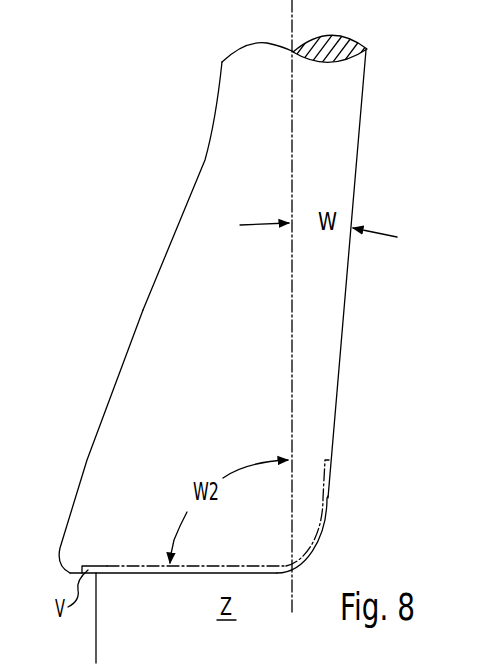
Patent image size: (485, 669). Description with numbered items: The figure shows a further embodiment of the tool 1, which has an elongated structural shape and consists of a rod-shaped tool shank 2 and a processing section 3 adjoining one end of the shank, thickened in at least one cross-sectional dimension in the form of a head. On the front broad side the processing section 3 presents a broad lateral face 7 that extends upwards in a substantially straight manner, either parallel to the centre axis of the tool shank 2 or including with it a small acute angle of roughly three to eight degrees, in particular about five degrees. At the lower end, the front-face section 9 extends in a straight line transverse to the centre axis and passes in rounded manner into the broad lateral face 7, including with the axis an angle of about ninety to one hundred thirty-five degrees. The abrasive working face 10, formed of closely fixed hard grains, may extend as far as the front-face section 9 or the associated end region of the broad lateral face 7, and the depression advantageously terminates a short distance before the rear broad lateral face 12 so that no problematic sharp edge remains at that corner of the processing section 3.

The tool 1 is at (386, 156).
The tool shank 2 is at (238, 73).
The processing section 3 is at (153, 378).
The broad lateral face 7 is at (336, 445).
The front-face section 9 is at (145, 575).
The abrasive working face 10 is at (307, 513).
The rear broad lateral face 12 is at (146, 296).